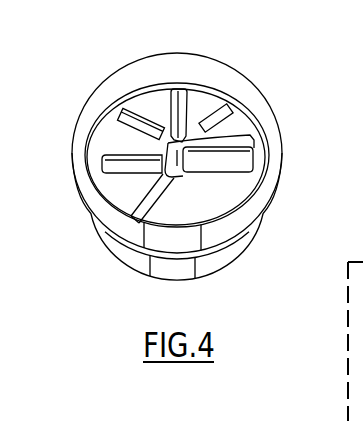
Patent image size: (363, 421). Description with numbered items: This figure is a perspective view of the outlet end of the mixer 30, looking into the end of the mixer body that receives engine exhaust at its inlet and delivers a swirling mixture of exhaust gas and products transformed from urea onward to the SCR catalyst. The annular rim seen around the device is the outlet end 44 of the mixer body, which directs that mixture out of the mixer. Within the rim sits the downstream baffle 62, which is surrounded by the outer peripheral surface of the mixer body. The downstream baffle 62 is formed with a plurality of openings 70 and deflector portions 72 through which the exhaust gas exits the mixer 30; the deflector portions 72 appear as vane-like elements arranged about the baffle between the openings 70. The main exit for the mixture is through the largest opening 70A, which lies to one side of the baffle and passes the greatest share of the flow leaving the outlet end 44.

The mixer 30 is at (221, 50).
The outlet end 44 is at (135, 77).
The downstream baffle 62 is at (177, 208).
The openings 70 is at (157, 152).
The largest opening 70A is at (218, 153).
The deflector portions 72 is at (100, 212).